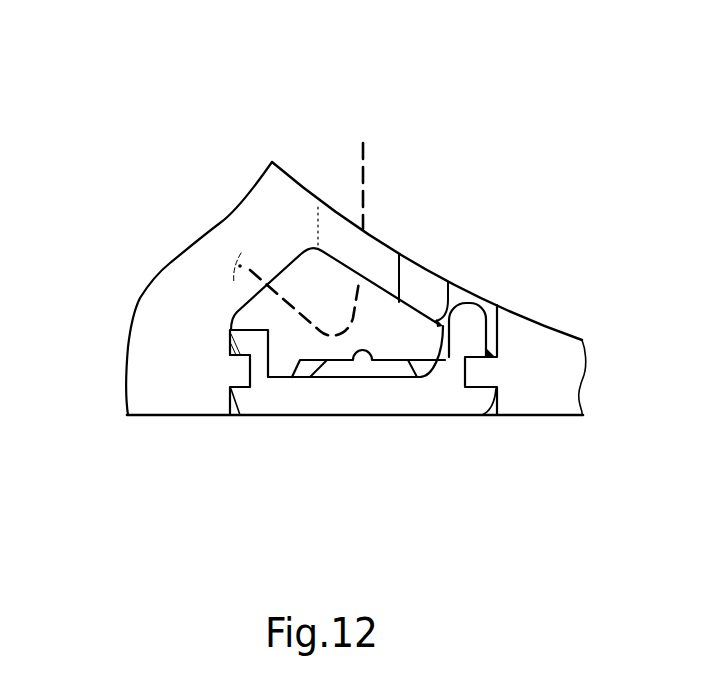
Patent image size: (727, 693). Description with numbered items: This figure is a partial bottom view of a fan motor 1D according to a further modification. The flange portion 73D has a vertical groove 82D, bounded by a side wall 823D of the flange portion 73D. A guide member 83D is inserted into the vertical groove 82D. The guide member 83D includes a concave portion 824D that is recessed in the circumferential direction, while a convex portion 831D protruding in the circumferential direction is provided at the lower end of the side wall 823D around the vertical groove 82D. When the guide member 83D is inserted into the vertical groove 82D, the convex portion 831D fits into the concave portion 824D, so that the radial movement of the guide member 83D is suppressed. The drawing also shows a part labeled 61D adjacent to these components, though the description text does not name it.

The fan motor 1D is at (206, 114).
The housing 61D is at (552, 345).
The flange portion 73D is at (138, 360).
The vertical groove 82D is at (285, 331).
The guide member 83D is at (348, 398).
The side wall 823D is at (500, 337).
The concave portion 824D is at (229, 332).
The convex portion 831D is at (240, 372).